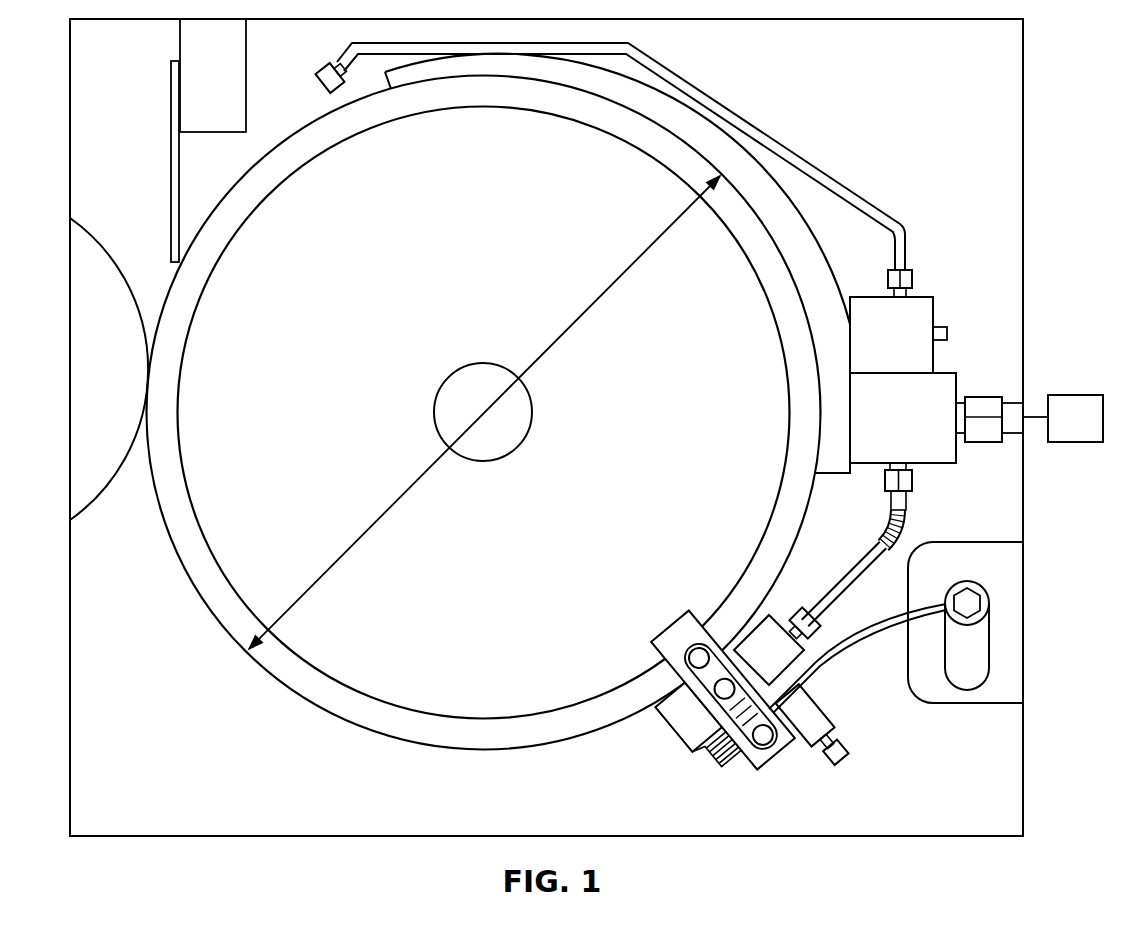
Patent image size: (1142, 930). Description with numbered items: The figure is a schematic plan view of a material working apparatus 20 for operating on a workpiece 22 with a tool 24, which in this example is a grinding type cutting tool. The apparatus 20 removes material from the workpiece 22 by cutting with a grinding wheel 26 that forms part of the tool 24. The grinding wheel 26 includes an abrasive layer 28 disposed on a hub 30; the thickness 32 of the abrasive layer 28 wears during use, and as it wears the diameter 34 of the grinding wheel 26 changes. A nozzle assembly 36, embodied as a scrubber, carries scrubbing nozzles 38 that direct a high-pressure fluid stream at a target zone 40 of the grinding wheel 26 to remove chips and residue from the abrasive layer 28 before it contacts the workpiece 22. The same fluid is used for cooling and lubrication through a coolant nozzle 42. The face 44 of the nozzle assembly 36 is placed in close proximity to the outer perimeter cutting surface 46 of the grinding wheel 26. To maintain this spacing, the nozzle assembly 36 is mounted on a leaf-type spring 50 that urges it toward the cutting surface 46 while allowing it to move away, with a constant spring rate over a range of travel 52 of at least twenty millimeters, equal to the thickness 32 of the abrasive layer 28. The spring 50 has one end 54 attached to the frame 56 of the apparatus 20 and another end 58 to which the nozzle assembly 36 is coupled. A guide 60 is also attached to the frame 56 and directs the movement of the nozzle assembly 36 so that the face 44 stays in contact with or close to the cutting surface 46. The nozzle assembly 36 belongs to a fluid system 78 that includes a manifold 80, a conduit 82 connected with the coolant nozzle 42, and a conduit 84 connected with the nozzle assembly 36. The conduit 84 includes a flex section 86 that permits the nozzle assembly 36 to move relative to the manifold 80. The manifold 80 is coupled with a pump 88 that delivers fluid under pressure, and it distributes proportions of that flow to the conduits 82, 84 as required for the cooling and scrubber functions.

The apparatus 20 is at (1052, 170).
The workpiece 22 is at (88, 372).
The tool 24 is at (195, 594).
The grinding wheel 26 is at (628, 429).
The abrasive layer 28 is at (296, 672).
The hub 30 is at (432, 398).
The thickness 32 is at (375, 783).
The diameter 34 is at (560, 330).
The nozzle assembly 36 is at (755, 667).
The scrubbing nozzle 38 is at (668, 640).
The target zone 40 is at (688, 715).
The coolant nozzle 42 is at (330, 80).
The face 44 is at (728, 636).
The cutting surface 46 is at (700, 682).
The spring 50 is at (852, 645).
The range of travel 52 is at (777, 607).
The end 54 is at (976, 598).
The frame 56 is at (936, 757).
The end 58 is at (712, 756).
The guide 60 is at (795, 752).
The fluid system 78 is at (963, 326).
The manifold 80 is at (957, 384).
The conduit 82 is at (782, 143).
The conduit 84 is at (860, 566).
The flex section 86 is at (908, 546).
The pump 88 is at (1063, 434).